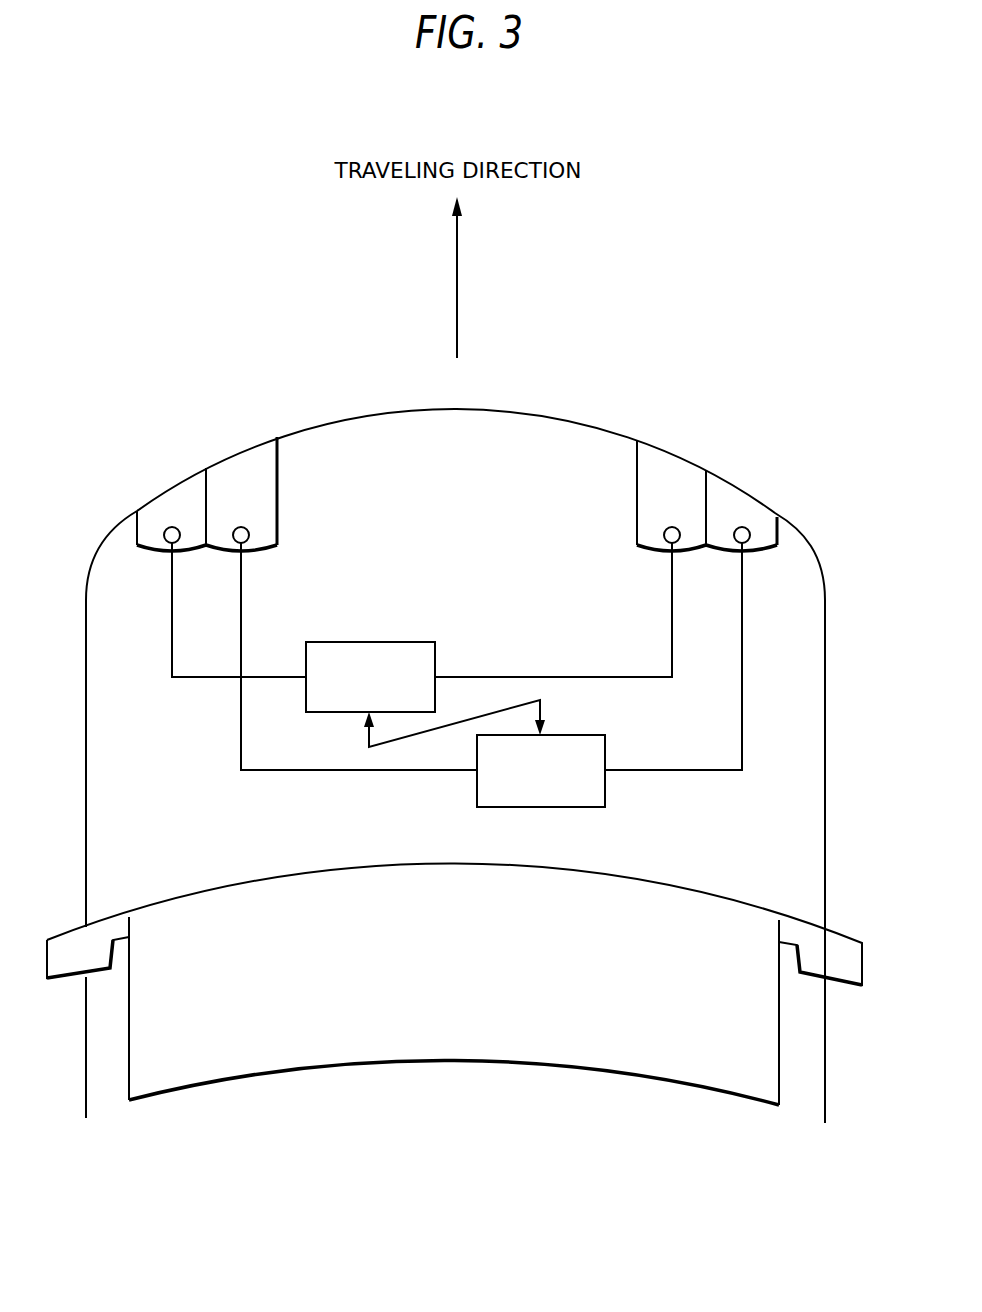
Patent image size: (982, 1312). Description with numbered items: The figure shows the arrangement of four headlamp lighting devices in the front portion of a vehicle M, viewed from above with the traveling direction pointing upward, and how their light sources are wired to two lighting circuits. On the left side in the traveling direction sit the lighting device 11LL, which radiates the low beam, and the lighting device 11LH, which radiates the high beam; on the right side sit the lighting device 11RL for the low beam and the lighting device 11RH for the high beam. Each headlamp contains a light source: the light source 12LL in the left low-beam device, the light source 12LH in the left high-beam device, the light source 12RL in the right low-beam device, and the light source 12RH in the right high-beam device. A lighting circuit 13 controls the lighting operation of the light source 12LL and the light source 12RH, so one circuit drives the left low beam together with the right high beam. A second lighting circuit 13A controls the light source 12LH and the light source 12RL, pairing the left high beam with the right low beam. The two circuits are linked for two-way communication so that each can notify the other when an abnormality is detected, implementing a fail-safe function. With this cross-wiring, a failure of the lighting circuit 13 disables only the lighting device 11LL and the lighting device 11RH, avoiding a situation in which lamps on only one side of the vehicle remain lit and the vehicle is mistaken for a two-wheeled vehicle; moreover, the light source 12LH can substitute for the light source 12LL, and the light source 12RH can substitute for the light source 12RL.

The vehicle M is at (810, 830).
The lighting device 11LL is at (192, 485).
The lighting device 11LH is at (252, 457).
The lighting device 11RL is at (720, 487).
The lighting device 11RH is at (660, 460).
The light source 12LL is at (166, 531).
The light source 12LH is at (249, 533).
The light source 12RL is at (748, 531).
The light source 12RH is at (664, 533).
The lighting circuit 13 is at (370, 642).
The lighting circuit 13A is at (568, 735).